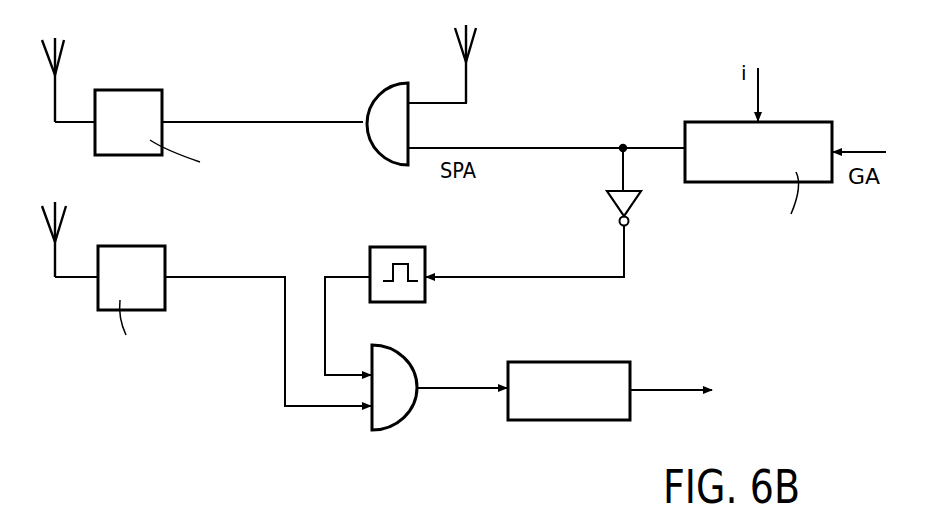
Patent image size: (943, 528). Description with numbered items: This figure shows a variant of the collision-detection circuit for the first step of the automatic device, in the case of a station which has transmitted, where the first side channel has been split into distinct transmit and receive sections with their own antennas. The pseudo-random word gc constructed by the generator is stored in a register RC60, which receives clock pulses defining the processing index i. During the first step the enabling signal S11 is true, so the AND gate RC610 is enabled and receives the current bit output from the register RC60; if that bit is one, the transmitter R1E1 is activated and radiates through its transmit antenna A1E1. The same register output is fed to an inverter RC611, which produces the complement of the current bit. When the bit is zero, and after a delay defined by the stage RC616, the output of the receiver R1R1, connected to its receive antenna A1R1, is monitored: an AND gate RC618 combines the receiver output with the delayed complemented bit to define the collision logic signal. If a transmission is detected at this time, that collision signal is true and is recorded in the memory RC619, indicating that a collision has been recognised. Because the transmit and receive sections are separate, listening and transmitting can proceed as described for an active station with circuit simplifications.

The transmit antenna A1E1 is at (66, 56).
The transmitter R1E1 is at (146, 90).
The AND gate RC610 is at (372, 100).
The signal S11 is at (477, 50).
The register RC60 is at (791, 122).
The inverter RC611 is at (633, 204).
The receive antenna A1R1 is at (70, 218).
The receiver R1R1 is at (145, 246).
The delay stage RC616 is at (403, 247).
The AND gate RC618 is at (385, 350).
The memory RC619 is at (615, 362).